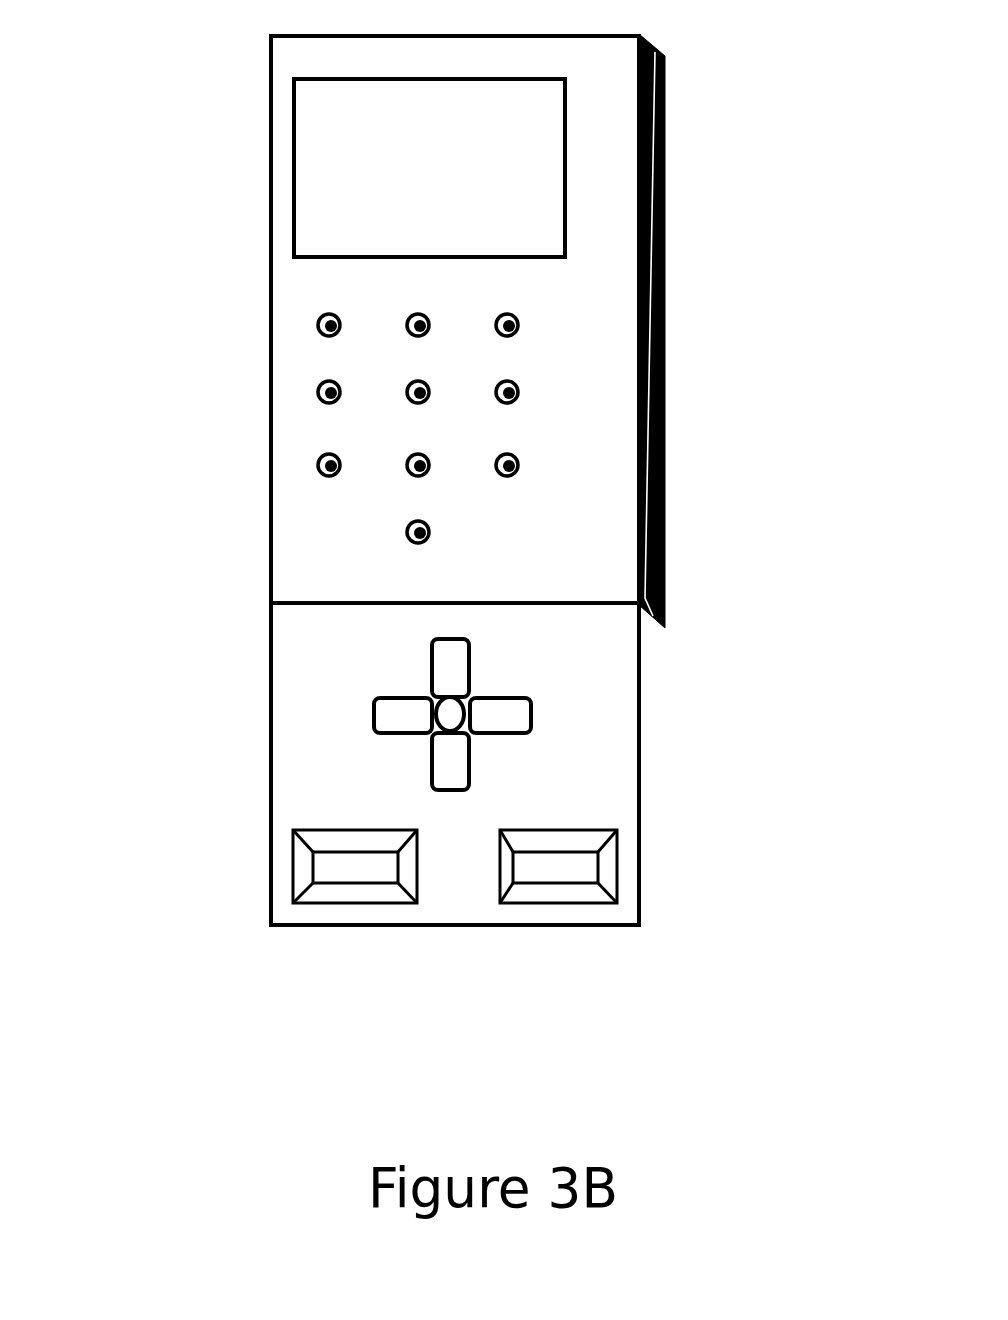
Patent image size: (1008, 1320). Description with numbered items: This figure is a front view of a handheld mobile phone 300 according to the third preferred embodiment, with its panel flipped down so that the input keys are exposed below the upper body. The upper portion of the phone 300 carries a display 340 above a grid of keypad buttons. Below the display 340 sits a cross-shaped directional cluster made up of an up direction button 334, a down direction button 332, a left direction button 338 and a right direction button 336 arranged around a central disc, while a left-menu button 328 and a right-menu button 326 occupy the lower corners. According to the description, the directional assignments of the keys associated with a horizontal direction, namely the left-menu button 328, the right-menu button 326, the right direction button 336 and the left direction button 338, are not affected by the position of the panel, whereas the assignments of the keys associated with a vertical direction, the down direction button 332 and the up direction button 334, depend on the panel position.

The phone 300 is at (700, 645).
The display 340 is at (429, 168).
The up direction button 334 is at (276, 599).
The right direction button 336 is at (646, 737).
The left direction button 338 is at (222, 755).
The down direction button 332 is at (468, 924).
The left-menu button 328 is at (291, 960).
The right-menu button 326 is at (654, 952).